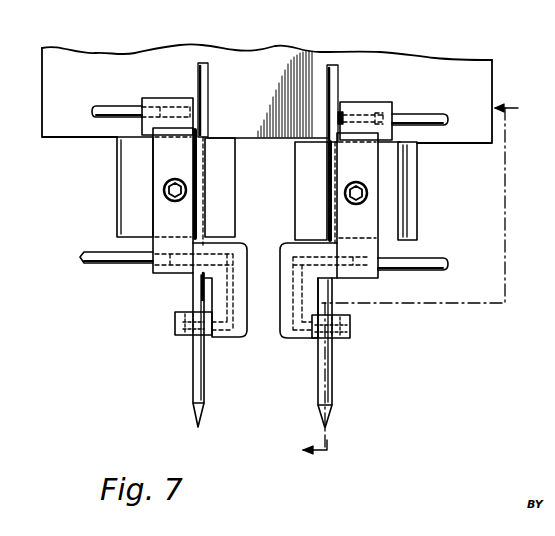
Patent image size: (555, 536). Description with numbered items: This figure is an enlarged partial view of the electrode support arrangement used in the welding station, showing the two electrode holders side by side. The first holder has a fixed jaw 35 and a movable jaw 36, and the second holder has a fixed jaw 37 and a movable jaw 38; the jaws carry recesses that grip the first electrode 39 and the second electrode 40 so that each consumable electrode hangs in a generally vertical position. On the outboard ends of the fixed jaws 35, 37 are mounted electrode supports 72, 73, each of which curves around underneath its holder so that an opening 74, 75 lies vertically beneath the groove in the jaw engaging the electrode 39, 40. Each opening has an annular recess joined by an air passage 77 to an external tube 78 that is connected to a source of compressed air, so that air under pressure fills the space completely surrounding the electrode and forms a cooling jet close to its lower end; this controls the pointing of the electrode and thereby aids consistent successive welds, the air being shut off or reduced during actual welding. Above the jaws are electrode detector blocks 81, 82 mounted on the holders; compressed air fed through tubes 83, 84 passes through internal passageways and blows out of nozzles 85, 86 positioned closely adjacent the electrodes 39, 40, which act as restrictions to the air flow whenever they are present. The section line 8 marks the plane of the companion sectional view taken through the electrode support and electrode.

The section line 8 is at (416, 278).
The fixed jaw 35 is at (405, 158).
The movable jaw 36 is at (305, 158).
The fixed jaw 37 is at (127, 163).
The movable jaw 38 is at (227, 168).
The first electrode 39 is at (333, 385).
The second electrode 40 is at (204, 385).
The electrode support 72 is at (360, 280).
The electrode support 73 is at (182, 272).
The opening 74 is at (350, 320).
The opening 75 is at (177, 335).
The air passage 77 is at (285, 243).
The external tube 78 is at (425, 267).
The electrode detector block 81 is at (393, 107).
The electrode detector block 82 is at (158, 100).
The tube 83 is at (427, 117).
The tube 84 is at (118, 110).
The nozzle 85 is at (345, 117).
The nozzle 86 is at (200, 92).